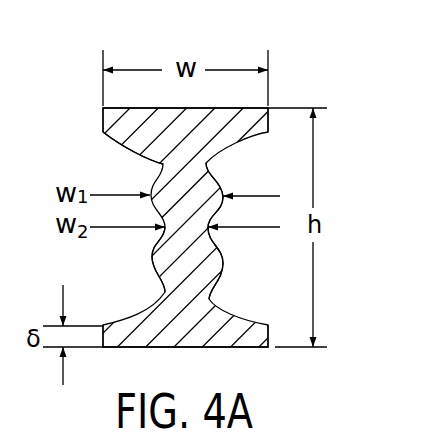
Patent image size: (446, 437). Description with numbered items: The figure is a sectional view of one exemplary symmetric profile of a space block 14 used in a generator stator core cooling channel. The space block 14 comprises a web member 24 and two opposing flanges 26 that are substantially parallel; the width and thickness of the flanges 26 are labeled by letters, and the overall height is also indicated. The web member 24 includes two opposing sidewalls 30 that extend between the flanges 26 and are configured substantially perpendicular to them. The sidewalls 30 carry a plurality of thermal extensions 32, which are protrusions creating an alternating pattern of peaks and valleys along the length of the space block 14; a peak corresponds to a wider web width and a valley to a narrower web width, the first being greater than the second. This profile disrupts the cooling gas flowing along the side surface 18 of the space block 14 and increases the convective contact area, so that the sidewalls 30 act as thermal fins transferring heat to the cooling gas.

The space block 14 is at (277, 100).
The opposing flanges 26 is at (214, 108).
The side surface 18 is at (163, 167).
The thermal extensions 32 is at (222, 206).
The sidewalls 30 is at (152, 257).
The web member 24 is at (223, 273).